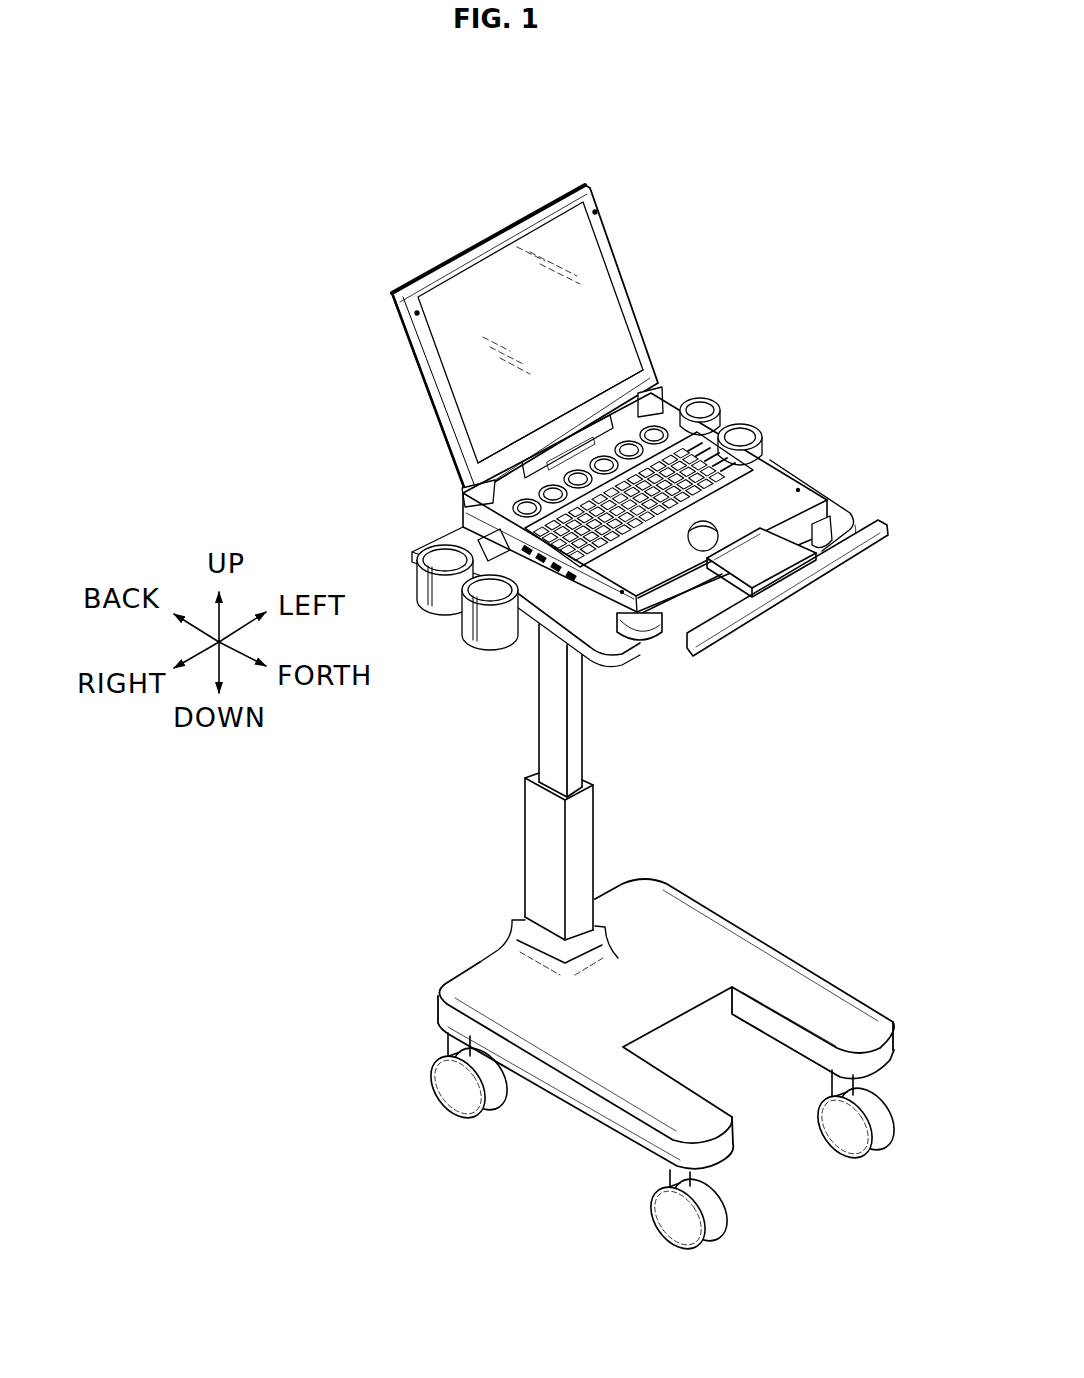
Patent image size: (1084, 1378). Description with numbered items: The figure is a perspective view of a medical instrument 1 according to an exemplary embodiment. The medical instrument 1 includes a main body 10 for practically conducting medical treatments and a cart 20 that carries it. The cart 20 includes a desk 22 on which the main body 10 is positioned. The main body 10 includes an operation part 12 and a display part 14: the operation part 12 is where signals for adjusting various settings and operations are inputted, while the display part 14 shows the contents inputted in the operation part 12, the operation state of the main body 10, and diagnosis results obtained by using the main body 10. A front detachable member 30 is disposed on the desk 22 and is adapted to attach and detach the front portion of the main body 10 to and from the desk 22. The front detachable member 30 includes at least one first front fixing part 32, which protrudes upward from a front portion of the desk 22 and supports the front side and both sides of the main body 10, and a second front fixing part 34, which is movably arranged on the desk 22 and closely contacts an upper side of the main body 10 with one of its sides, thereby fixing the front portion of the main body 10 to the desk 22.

The medical instrument 1 is at (402, 226).
The main body 10 is at (678, 418).
The operation part 12 is at (762, 490).
The display part 14 is at (585, 310).
The cart 20 is at (600, 832).
The desk 22 is at (582, 610).
The front detachable member 30 is at (840, 712).
The first front fixing part 32 is at (643, 633).
The second front fixing part 34 is at (753, 600).